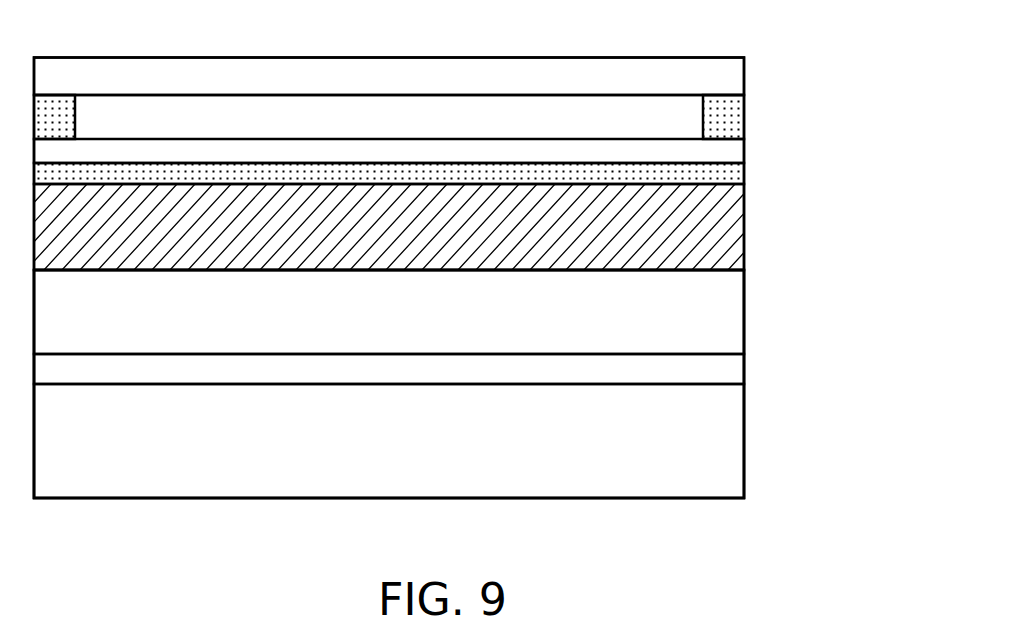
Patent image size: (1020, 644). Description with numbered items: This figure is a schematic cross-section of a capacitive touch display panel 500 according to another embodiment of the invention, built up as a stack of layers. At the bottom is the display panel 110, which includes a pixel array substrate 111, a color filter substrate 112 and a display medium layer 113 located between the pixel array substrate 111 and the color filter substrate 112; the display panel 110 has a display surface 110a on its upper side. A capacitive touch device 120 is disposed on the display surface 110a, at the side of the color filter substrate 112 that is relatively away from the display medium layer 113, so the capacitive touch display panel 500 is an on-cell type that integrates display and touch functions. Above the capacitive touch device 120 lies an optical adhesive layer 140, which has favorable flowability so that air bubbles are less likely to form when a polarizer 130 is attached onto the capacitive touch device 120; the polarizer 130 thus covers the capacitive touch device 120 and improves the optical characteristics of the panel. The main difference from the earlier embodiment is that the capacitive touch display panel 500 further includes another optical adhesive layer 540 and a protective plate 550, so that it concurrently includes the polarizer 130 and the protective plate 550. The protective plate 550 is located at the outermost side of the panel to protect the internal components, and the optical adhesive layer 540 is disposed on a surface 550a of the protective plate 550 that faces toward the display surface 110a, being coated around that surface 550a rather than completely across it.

The capacitive touch display panel 500 is at (784, 564).
The protective plate 550 is at (741, 83).
The surface of the protective plate 550a is at (666, 97).
The optical adhesive layer 540 is at (741, 116).
The polarizer 130 is at (741, 149).
The optical adhesive layer 140 is at (741, 175).
The capacitive touch device 120 is at (741, 208).
The display surface 110a is at (695, 267).
The display panel 110 is at (801, 303).
The color filter substrate 112 is at (741, 317).
The display medium layer 113 is at (741, 372).
The pixel array substrate 111 is at (741, 442).